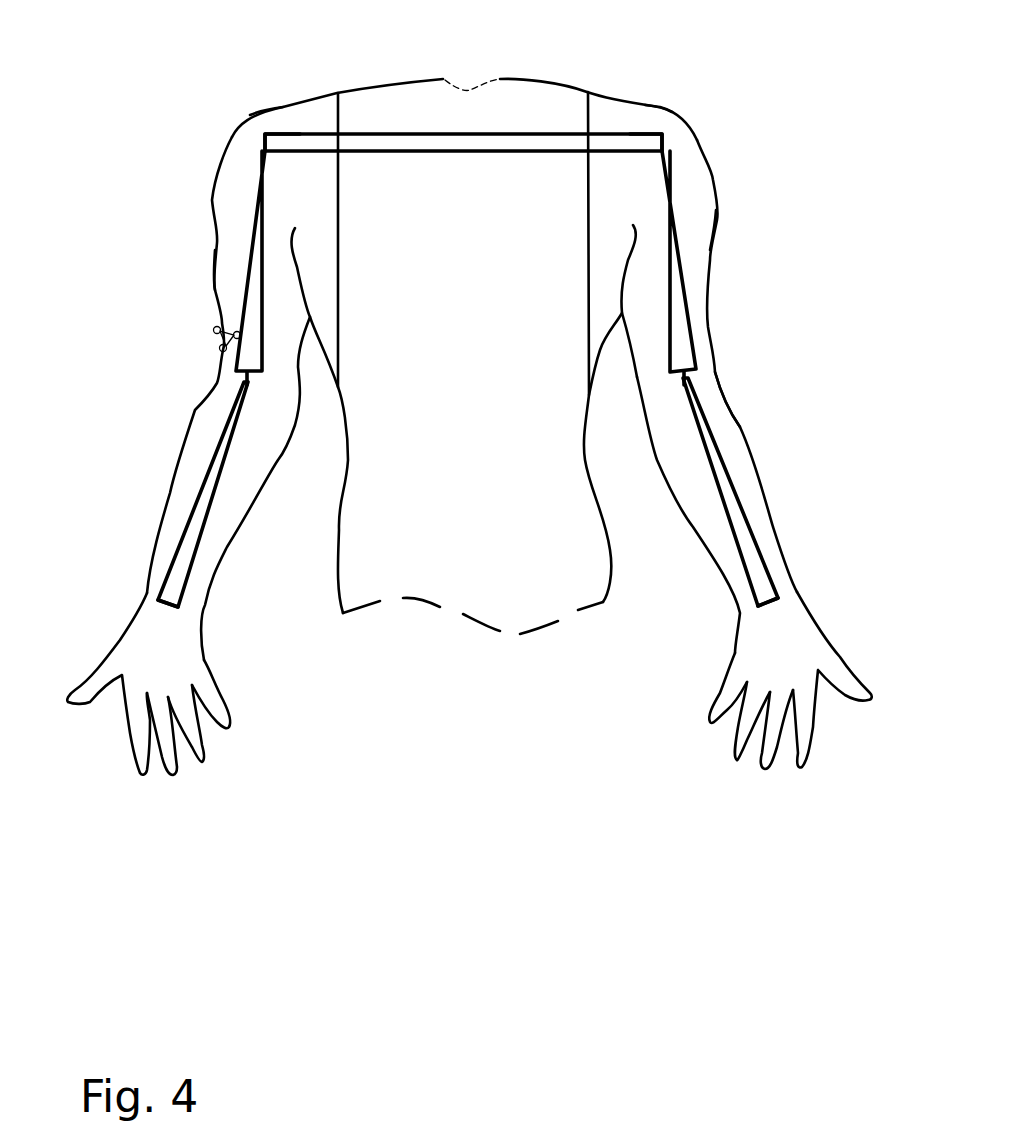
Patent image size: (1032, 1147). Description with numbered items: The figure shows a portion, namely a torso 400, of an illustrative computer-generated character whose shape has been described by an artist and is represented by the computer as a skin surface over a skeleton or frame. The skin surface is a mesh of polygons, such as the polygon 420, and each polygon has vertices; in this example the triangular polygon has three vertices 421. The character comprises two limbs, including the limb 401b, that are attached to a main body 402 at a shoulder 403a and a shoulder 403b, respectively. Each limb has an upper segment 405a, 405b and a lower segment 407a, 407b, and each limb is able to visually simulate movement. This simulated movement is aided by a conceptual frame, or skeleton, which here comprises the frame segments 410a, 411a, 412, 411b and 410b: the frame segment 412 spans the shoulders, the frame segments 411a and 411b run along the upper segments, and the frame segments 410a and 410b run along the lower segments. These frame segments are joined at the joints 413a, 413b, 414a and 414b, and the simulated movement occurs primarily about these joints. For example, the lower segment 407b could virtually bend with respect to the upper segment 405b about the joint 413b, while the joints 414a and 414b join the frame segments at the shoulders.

The torso portion 400 is at (547, 627).
The main body 402 is at (192, 465).
The shoulder 403a is at (283, 102).
The shoulder 403b is at (662, 105).
The upper segment 405a is at (227, 277).
The upper segment 405b is at (697, 222).
The limb 401b is at (737, 403).
The lower segment 407a is at (228, 483).
The lower segment 407b is at (737, 470).
The frame segment 410a is at (185, 557).
The frame segment 410b is at (750, 557).
The frame segment 411a is at (260, 265).
The frame segment 411b is at (673, 290).
The frame segment 412 is at (465, 133).
The joint 413a is at (247, 385).
The joint 413b is at (685, 375).
The joint 414a is at (268, 155).
The joint 414b is at (658, 153).
The polygon 420 is at (213, 343).
The vertices 421 is at (233, 331).